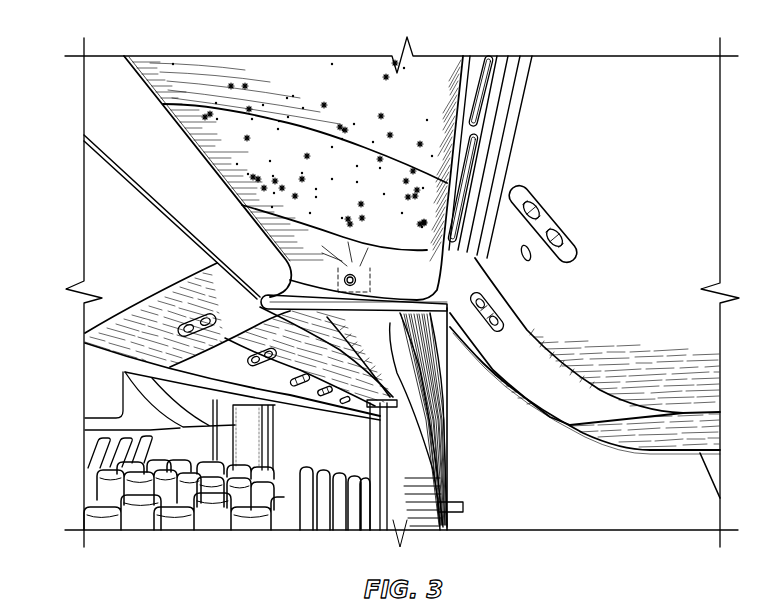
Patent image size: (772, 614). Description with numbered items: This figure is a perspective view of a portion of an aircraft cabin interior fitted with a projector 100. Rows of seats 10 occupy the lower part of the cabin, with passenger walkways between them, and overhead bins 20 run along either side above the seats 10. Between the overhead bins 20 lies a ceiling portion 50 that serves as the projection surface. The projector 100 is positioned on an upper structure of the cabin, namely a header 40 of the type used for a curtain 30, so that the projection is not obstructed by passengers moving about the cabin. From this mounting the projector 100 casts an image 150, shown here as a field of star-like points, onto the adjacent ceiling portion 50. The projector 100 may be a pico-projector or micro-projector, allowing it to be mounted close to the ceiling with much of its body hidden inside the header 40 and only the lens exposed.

The seats 10 is at (138, 505).
The overhead bins 20 is at (147, 264).
The curtain 30 is at (443, 418).
The header 40 is at (423, 270).
The ceiling portion 50 is at (289, 162).
The projector 100 is at (262, 297).
The image 150 is at (243, 82).